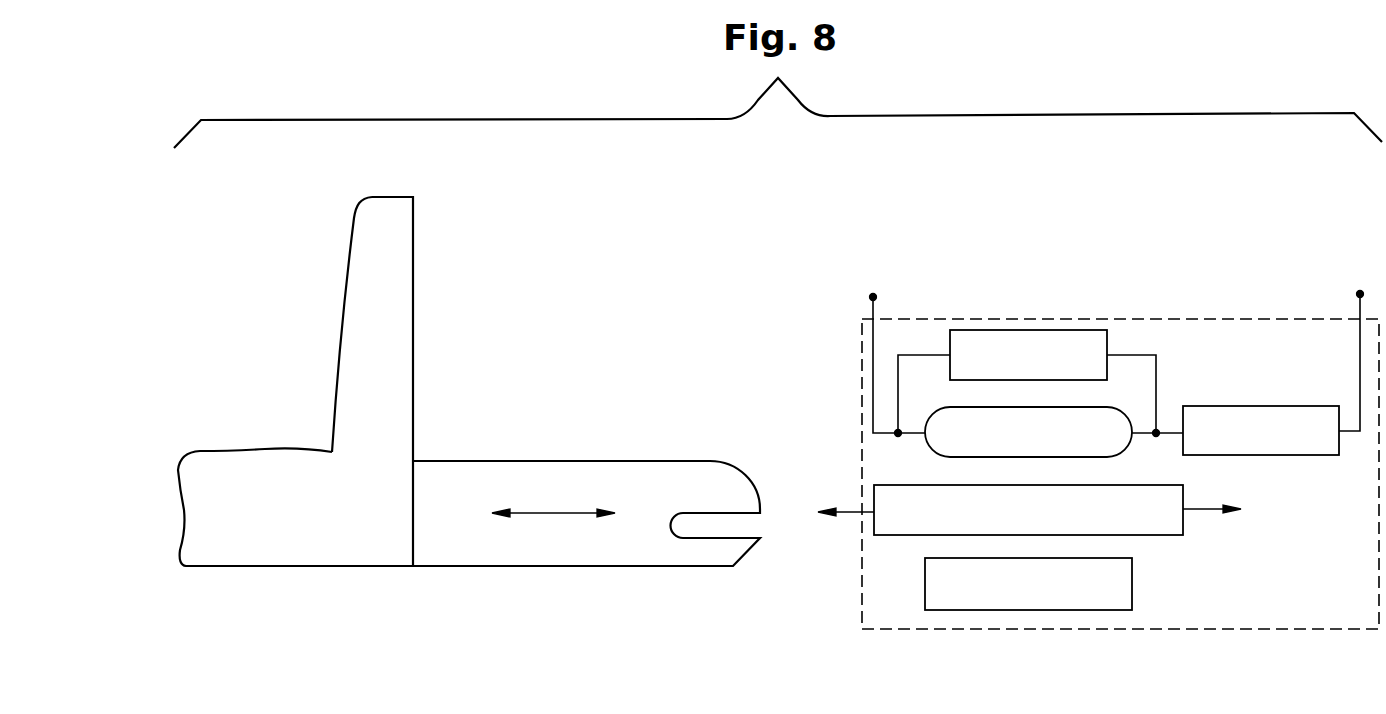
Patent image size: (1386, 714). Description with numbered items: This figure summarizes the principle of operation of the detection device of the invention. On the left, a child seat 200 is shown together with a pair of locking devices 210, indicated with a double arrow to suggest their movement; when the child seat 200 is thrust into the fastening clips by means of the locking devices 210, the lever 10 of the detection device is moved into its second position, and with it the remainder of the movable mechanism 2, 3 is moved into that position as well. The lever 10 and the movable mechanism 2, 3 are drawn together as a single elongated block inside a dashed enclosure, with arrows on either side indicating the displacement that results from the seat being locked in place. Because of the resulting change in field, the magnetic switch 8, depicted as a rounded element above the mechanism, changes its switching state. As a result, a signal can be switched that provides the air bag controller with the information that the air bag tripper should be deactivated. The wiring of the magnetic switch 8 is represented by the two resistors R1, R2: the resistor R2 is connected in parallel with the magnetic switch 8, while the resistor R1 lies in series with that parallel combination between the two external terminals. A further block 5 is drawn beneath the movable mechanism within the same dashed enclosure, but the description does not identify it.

The child seat 200 is at (287, 552).
The locking device 210 is at (518, 550).
The magnetic switch 8 is at (1087, 424).
The movable mechanism 2 is at (1031, 542).
The movable mechanism 3 is at (1031, 542).
The lever 10 is at (1140, 513).
The evaluation unit 5 is at (937, 582).
The resistor R1 is at (1261, 430).
The resistor R2 is at (1028, 355).